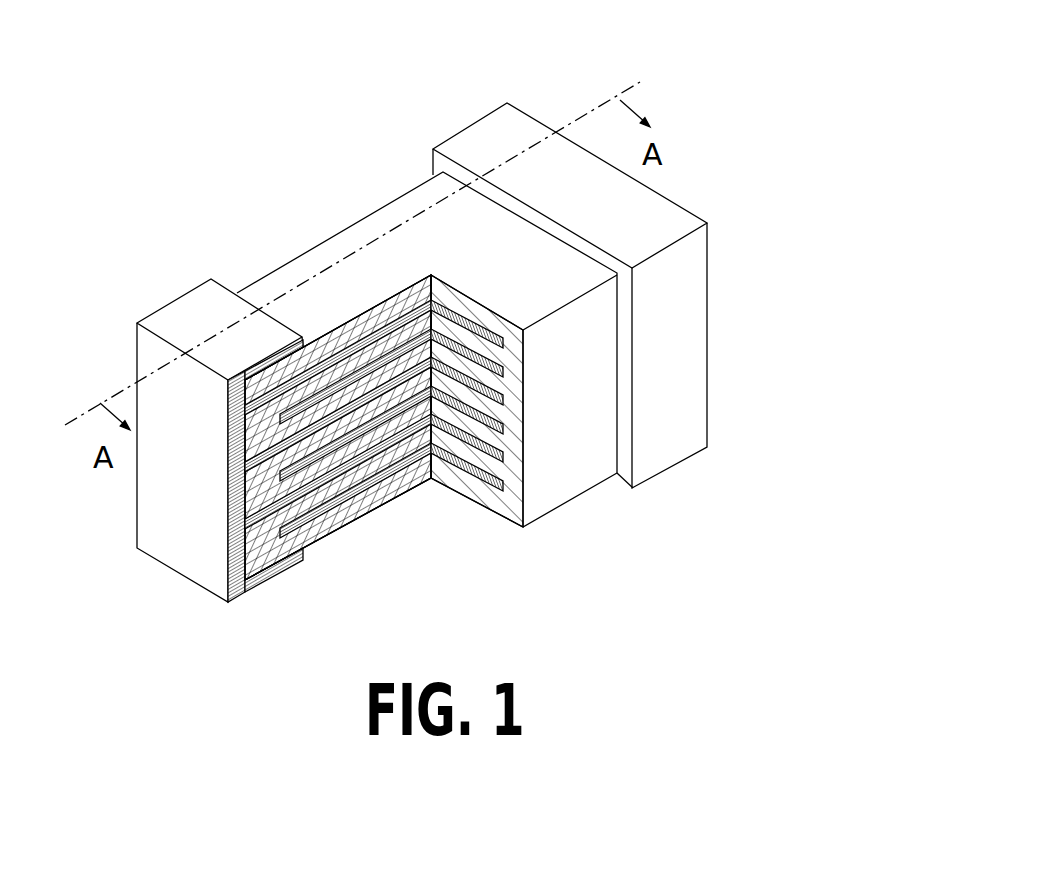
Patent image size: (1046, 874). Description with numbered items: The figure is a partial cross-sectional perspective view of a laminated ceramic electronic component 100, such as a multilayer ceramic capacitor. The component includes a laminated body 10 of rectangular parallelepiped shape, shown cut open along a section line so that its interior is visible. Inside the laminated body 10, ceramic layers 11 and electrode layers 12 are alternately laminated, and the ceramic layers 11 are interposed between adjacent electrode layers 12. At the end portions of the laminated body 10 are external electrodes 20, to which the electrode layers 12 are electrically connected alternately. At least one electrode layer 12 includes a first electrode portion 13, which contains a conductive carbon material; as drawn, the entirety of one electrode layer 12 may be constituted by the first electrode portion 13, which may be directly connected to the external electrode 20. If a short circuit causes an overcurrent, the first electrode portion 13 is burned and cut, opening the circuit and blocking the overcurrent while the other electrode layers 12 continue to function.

The laminated ceramic electronic component 100 is at (702, 35).
The laminated body 10 is at (381, 399).
The ceramic layer 11 is at (413, 480).
The electrode layer 12 is at (370, 462).
The first electrode portion 13 is at (391, 477).
The external electrode 20 is at (197, 315).